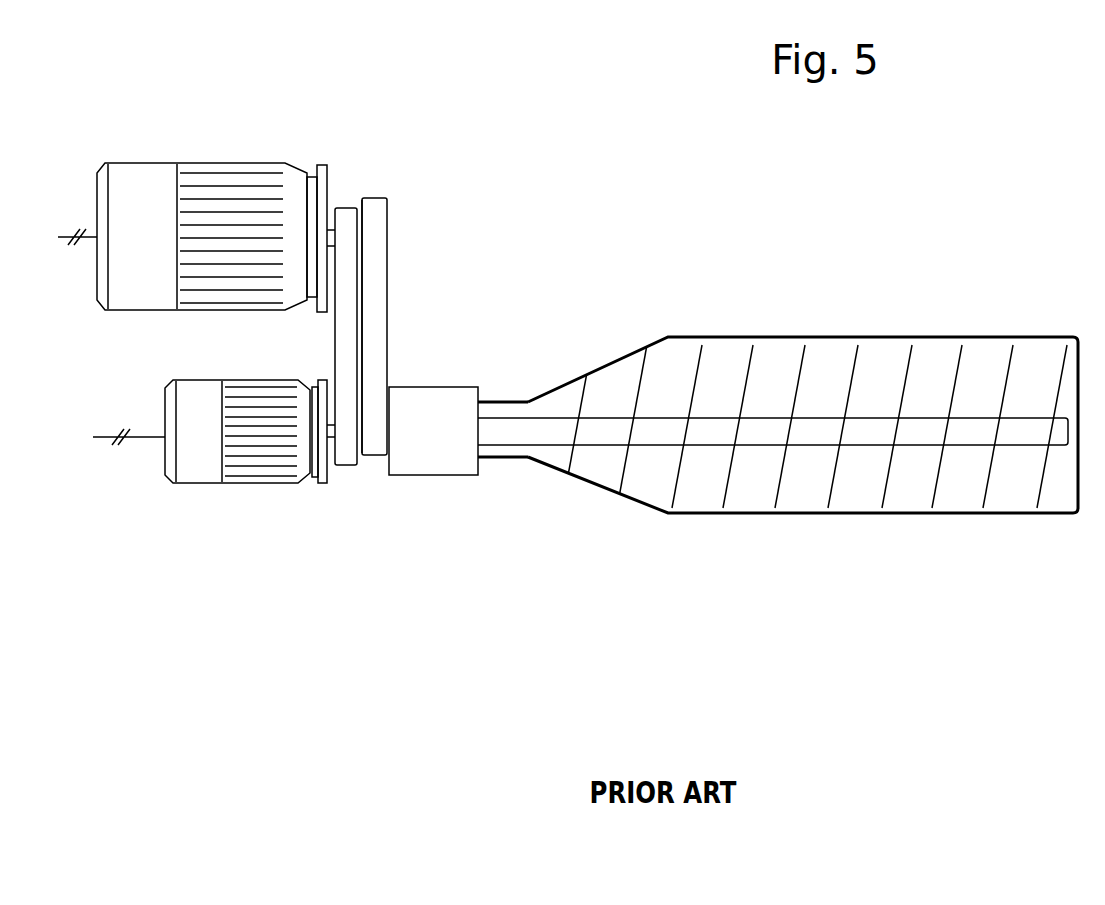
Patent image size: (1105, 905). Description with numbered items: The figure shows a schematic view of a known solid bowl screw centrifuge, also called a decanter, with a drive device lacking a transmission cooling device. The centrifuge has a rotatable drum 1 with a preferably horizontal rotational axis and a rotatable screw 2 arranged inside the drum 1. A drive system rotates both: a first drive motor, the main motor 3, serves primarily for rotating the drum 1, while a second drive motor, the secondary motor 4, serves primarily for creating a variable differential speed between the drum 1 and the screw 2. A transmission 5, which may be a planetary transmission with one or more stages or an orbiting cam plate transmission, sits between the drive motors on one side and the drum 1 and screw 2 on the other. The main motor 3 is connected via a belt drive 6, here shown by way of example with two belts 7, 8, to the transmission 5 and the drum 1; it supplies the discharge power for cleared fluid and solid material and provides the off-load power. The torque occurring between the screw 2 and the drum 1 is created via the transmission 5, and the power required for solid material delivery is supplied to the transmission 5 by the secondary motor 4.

The drum 1 is at (935, 512).
The screw 2 is at (953, 378).
The main motor 3 is at (253, 162).
The secondary motor 4 is at (190, 483).
The transmission 5 is at (432, 475).
The belt drive 6 is at (385, 197).
The belt 7 is at (345, 275).
The belt 8 is at (377, 323).